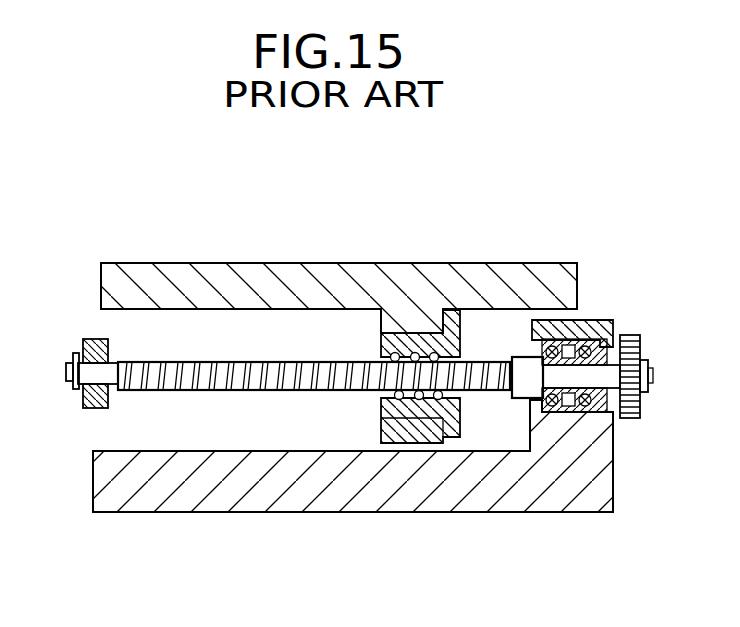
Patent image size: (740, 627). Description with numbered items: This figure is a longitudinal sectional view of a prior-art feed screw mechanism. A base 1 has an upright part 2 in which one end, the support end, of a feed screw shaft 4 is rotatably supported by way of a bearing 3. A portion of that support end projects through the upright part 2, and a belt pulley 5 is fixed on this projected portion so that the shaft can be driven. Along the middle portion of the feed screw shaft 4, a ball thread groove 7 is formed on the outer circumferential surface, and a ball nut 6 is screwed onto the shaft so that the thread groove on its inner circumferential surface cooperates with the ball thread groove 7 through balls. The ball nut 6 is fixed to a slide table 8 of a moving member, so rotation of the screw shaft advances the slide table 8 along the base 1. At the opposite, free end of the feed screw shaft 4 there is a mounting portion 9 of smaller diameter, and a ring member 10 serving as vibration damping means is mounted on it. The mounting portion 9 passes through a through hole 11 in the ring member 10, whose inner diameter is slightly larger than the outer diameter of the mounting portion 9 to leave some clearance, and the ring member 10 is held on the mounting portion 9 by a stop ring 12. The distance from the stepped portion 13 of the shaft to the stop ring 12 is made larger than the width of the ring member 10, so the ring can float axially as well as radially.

The base 1 is at (458, 513).
The upright part 2 is at (588, 322).
The bearing 3 is at (617, 323).
The feed screw shaft 4 is at (605, 393).
The belt pulley 5 is at (641, 351).
The ball nut 6 is at (427, 340).
The ball thread groove 7 is at (276, 362).
The slide table 8 is at (553, 262).
The mounting portion 9 is at (125, 362).
The ring member 10 is at (93, 339).
The through hole 11 is at (77, 393).
The stop ring 12 is at (73, 355).
The stepped portion 13 is at (112, 392).